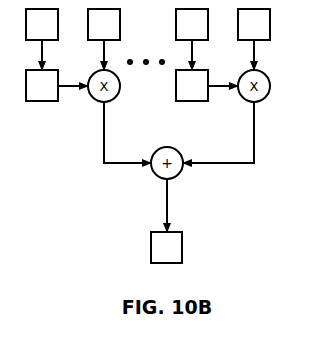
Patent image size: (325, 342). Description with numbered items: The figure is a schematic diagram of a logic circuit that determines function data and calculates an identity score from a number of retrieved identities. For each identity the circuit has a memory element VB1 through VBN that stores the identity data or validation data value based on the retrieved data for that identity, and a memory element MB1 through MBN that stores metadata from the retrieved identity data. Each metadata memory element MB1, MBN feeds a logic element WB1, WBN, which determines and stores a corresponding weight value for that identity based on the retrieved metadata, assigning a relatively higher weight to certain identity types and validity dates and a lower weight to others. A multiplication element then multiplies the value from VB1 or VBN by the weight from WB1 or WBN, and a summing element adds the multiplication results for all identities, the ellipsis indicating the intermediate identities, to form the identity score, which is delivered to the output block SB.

The memory element MB1 is at (42, 24).
The memory element VB1 is at (104, 24).
The logic element WB1 is at (42, 85).
The memory element MBN is at (192, 24).
The memory element VBN is at (254, 24).
The logic element WBN is at (192, 85).
The sum block SB is at (166, 247).